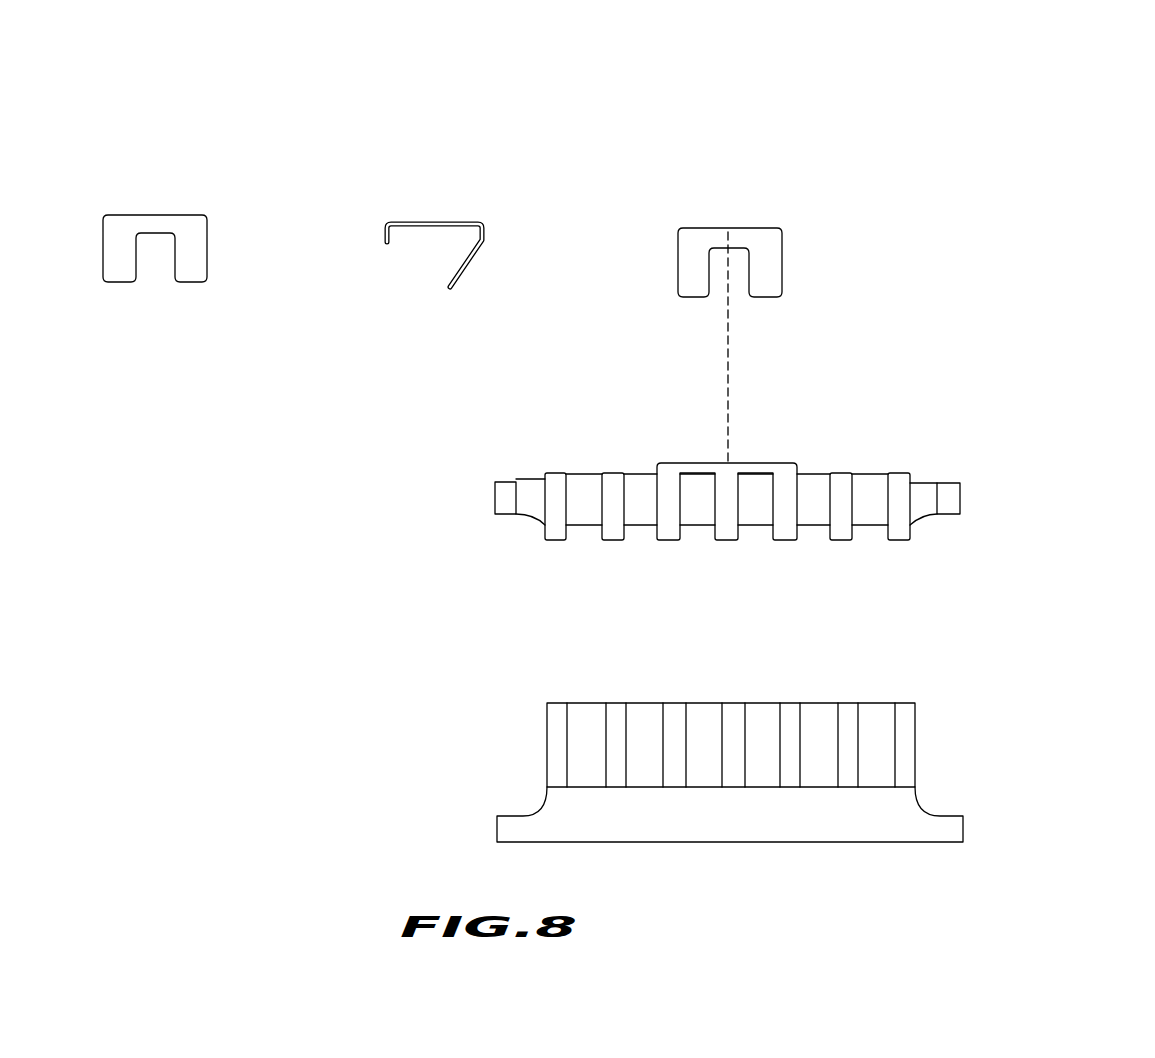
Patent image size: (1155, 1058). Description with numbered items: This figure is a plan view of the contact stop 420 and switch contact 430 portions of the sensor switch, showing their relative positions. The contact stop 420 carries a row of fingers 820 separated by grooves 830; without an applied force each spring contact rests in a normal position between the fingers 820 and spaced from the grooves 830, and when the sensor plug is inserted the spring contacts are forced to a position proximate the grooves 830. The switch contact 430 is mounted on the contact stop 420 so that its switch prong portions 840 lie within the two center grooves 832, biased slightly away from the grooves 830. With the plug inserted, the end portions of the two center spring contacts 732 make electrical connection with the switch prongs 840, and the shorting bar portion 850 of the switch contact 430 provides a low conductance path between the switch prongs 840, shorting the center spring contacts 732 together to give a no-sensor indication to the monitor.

The switch contact 430 is at (444, 165).
The shorting bar portion 850 is at (793, 261).
The switch prong portions 840 is at (692, 297).
The grooves 830 is at (588, 472).
The fingers 820 is at (670, 540).
The center grooves 832 is at (753, 540).
The contact stop 420 is at (780, 601).
The center spring contacts 732 is at (707, 703).